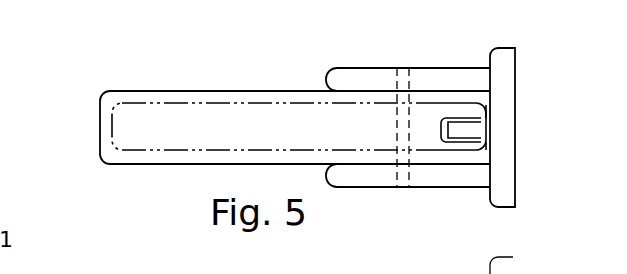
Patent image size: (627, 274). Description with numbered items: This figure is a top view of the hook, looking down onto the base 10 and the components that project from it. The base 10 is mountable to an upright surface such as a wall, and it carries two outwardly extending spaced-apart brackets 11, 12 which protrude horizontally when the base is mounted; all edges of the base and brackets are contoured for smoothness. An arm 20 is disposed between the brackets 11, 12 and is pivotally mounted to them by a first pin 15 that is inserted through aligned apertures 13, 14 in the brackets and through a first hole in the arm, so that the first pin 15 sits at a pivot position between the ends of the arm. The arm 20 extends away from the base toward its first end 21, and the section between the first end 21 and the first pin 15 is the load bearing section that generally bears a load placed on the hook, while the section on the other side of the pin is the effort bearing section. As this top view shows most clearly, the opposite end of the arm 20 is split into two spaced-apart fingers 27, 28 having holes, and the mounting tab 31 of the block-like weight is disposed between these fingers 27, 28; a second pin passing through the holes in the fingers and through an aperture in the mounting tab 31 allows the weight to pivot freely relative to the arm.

The base 10 is at (505, 77).
The bracket 11 is at (462, 180).
The bracket 12 is at (460, 78).
The aperture 13 is at (405, 186).
The aperture 14 is at (403, 72).
The first pin 15 is at (403, 122).
The arm 20 is at (179, 158).
The first end 21 is at (100, 129).
The finger 27 is at (470, 155).
The finger 28 is at (475, 110).
The mounting tab 31 is at (473, 132).